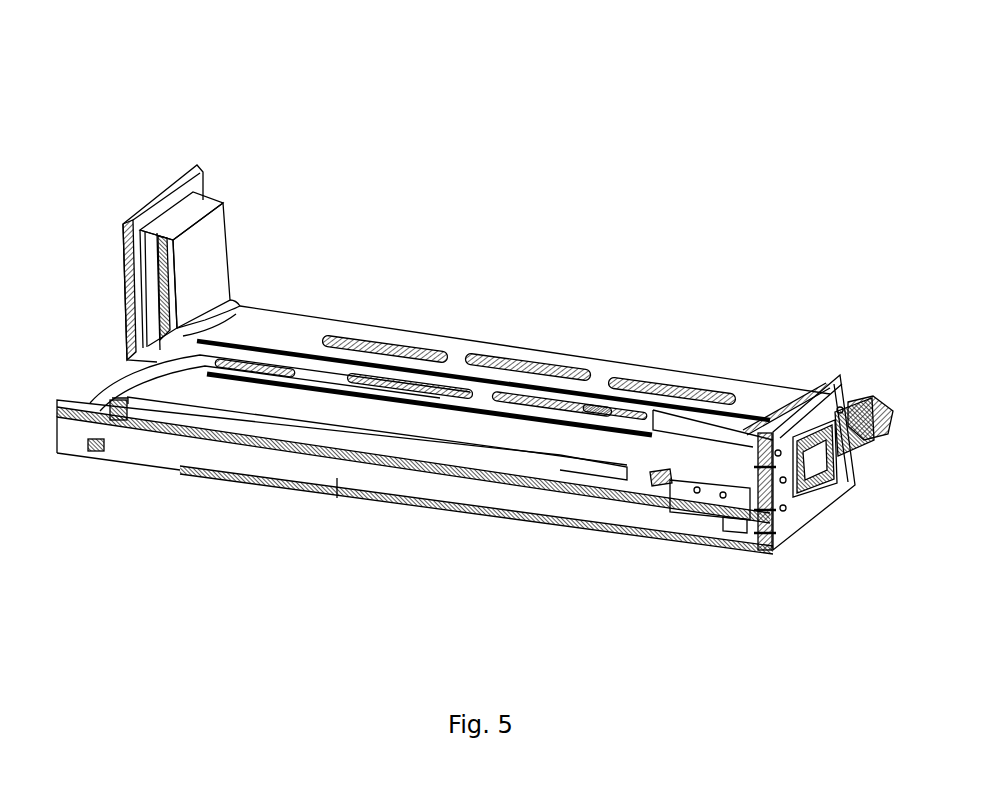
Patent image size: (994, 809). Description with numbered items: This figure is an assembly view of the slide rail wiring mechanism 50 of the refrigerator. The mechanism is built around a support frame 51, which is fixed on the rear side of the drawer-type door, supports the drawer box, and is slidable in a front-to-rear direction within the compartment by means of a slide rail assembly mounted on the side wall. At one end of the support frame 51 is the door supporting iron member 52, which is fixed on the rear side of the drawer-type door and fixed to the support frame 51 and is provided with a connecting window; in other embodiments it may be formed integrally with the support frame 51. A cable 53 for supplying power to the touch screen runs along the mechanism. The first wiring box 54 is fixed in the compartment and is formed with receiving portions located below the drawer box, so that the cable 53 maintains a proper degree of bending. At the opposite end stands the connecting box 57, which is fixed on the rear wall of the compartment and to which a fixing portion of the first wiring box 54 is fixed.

The slide rail wiring mechanism 50 is at (506, 79).
The support frame 51 is at (336, 493).
The door supporting iron member 52 is at (803, 512).
The cable 53 is at (101, 398).
The first wiring box 54 is at (590, 358).
The connecting box 57 is at (122, 277).